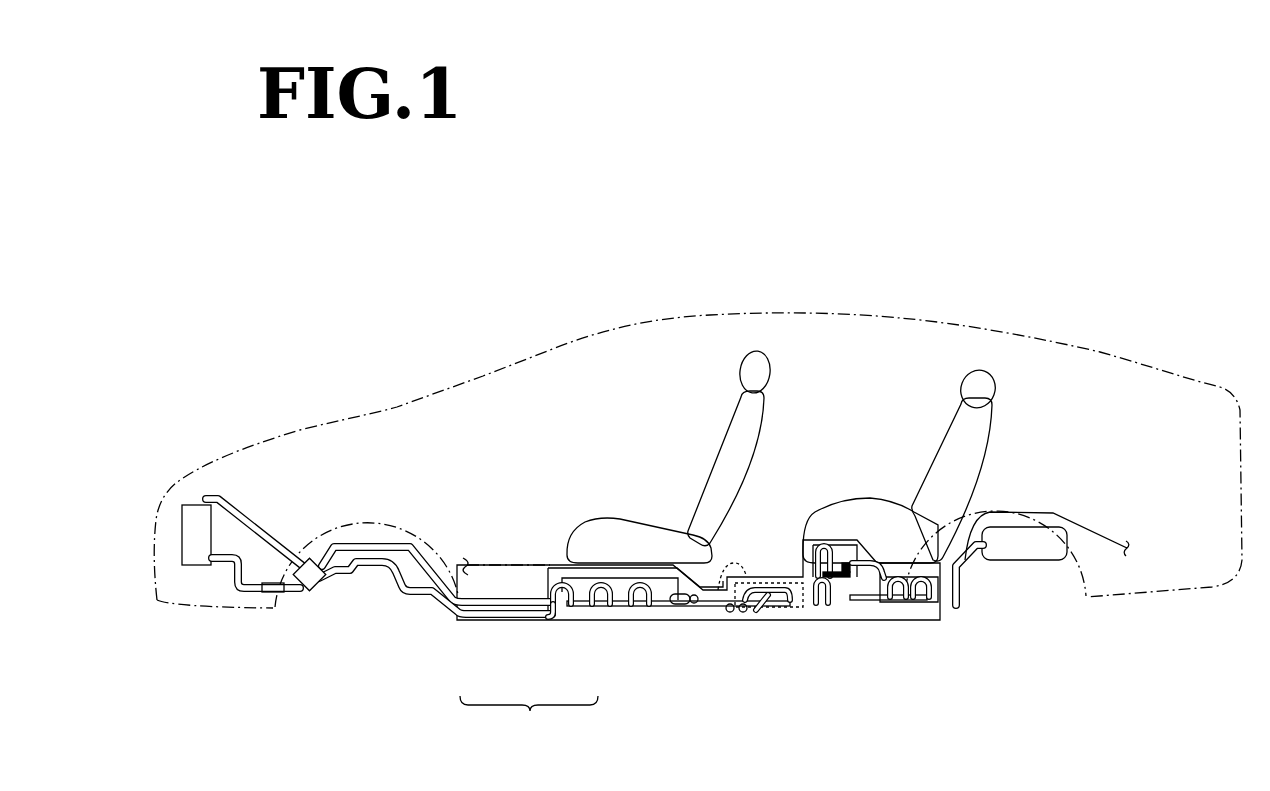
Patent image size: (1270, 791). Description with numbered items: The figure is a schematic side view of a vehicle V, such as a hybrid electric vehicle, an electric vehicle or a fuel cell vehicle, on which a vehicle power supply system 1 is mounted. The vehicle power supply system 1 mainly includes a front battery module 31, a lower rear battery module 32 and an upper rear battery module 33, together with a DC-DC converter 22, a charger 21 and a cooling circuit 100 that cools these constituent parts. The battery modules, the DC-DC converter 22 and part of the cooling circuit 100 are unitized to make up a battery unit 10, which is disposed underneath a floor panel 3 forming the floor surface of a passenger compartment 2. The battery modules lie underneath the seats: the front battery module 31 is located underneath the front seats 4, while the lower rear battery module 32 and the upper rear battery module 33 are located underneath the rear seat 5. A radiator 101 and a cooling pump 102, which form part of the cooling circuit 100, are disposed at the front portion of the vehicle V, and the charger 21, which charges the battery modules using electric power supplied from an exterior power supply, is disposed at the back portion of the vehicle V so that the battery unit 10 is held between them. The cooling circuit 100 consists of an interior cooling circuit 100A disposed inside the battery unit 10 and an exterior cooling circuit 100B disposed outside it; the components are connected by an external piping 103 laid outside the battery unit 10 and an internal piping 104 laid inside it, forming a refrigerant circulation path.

The vehicle V is at (1018, 292).
The vehicle power supply system 1 is at (856, 371).
The passenger compartment 2 is at (854, 441).
The floor panel 3 is at (713, 563).
The front seats 4 is at (638, 521).
The rear seat 5 is at (880, 505).
The battery unit 10 is at (752, 613).
The charger 21 is at (1025, 527).
The DC-DC converter 22 is at (772, 583).
The front battery module 31 is at (623, 614).
The lower rear battery module 32 is at (883, 606).
The upper rear battery module 33 is at (840, 548).
The cooling circuit 100 is at (529, 717).
The interior cooling circuit 100A is at (577, 614).
The exterior cooling circuit 100B is at (503, 621).
The radiator 101 is at (193, 532).
The cooling pump 102 is at (315, 585).
The external piping 103 is at (413, 601).
The internal piping 104 is at (702, 608).